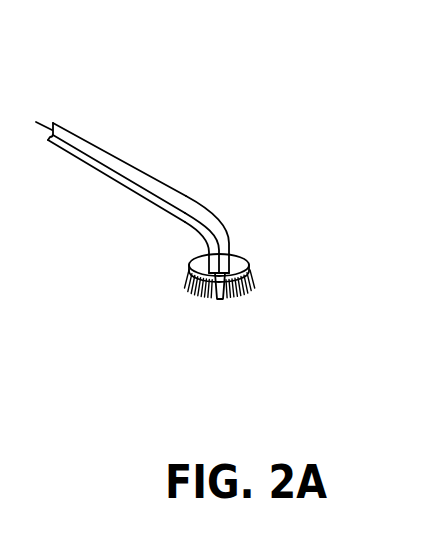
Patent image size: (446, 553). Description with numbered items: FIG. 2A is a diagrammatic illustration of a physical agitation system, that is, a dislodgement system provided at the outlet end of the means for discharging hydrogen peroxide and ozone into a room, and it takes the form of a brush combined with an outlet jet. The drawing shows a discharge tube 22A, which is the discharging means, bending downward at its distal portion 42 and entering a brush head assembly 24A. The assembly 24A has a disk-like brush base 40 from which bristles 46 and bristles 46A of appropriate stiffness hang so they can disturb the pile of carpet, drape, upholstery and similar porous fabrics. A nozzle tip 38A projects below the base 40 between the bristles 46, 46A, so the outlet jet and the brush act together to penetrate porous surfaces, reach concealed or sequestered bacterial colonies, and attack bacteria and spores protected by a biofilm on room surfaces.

The tube / catheter shaft 22A is at (102, 146).
The bent distal tube portion 42 is at (237, 262).
The brush head assembly 24A is at (287, 216).
The brush disk / base 40 is at (243, 267).
The bristles (right side) 46 is at (248, 287).
The bristles (left side) 46A is at (188, 276).
The nozzle tip / outlet 38A is at (220, 300).